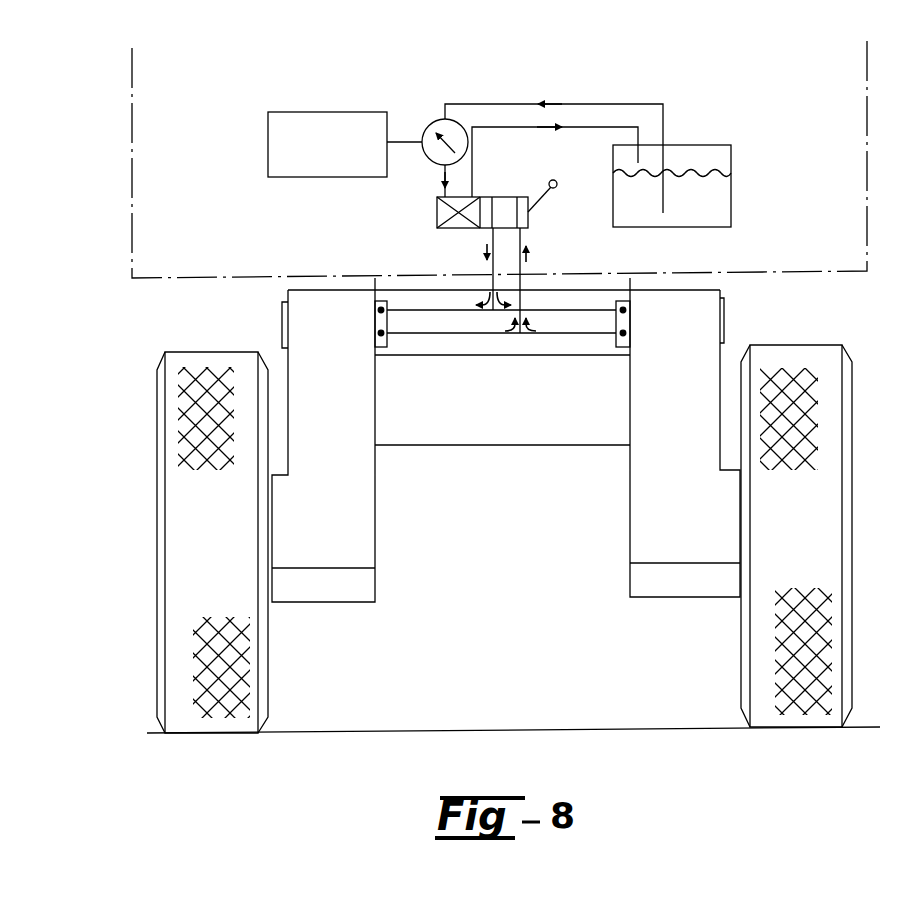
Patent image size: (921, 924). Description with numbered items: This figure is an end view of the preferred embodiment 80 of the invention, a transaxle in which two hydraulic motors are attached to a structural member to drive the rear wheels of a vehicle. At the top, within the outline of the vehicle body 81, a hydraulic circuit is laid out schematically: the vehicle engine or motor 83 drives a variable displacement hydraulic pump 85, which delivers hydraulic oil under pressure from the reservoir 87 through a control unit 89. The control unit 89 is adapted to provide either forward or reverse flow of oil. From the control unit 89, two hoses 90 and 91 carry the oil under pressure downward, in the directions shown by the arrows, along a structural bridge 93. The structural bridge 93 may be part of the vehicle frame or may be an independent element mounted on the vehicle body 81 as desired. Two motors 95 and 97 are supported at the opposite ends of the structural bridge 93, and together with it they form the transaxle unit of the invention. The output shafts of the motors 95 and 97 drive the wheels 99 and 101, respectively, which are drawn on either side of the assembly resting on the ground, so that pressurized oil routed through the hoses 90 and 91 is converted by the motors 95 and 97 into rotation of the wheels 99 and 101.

The preferred embodiment 80 is at (527, 555).
The vehicle body 81 is at (867, 193).
The vehicle engine or motor 83 is at (268, 144).
The variable displacement hydraulic pump 85 is at (431, 124).
The reservoir 87 is at (731, 181).
The control unit 89 is at (528, 219).
The hose 90 is at (487, 268).
The hose 91 is at (523, 268).
The structural bridge 93 is at (440, 447).
The motor 95 is at (375, 583).
The motor 97 is at (630, 518).
The wheel 99 is at (208, 350).
The wheel 101 is at (790, 343).